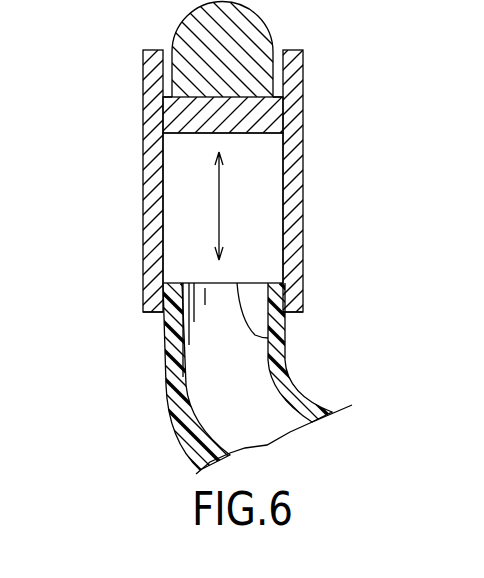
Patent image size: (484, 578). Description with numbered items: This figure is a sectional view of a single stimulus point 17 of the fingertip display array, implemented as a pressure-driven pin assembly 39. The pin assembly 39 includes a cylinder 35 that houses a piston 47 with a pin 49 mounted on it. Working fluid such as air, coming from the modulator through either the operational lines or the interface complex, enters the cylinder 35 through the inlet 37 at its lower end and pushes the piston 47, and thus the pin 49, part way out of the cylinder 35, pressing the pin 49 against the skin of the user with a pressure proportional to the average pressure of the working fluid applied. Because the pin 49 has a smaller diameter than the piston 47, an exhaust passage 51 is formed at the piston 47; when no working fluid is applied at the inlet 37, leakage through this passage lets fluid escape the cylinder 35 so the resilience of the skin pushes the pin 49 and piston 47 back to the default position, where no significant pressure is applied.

The pin 49 is at (238, 55).
The piston 47 is at (268, 112).
The exhaust passage 51 is at (168, 109).
The cylinder 35 is at (143, 211).
The pin assembly 39 is at (128, 250).
The stimulus point 17 is at (127, 314).
The inlet 37 is at (268, 338).